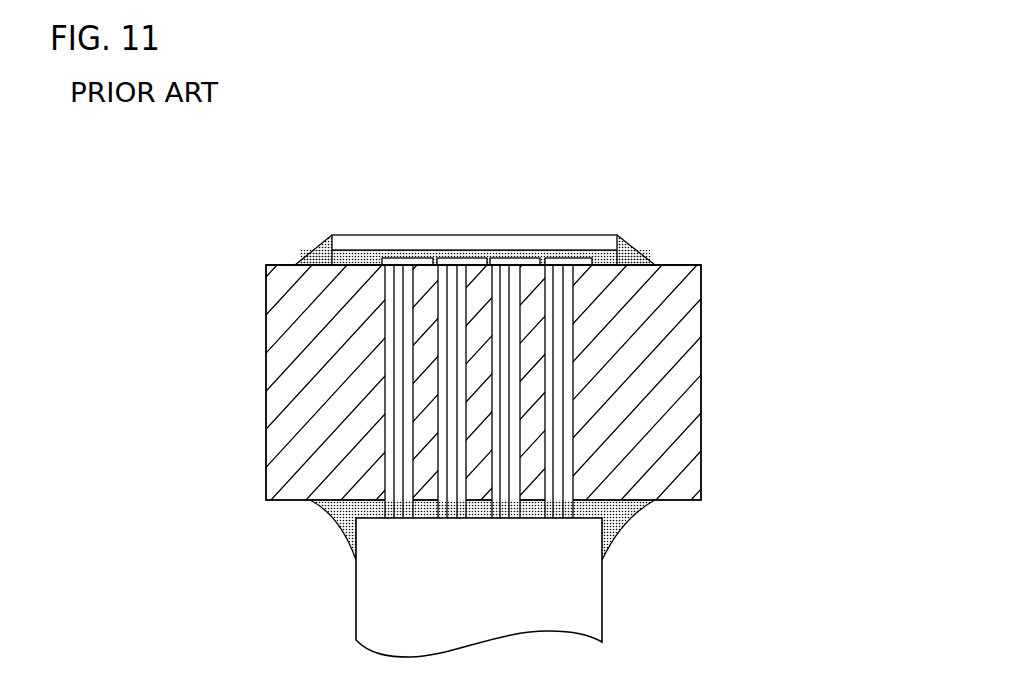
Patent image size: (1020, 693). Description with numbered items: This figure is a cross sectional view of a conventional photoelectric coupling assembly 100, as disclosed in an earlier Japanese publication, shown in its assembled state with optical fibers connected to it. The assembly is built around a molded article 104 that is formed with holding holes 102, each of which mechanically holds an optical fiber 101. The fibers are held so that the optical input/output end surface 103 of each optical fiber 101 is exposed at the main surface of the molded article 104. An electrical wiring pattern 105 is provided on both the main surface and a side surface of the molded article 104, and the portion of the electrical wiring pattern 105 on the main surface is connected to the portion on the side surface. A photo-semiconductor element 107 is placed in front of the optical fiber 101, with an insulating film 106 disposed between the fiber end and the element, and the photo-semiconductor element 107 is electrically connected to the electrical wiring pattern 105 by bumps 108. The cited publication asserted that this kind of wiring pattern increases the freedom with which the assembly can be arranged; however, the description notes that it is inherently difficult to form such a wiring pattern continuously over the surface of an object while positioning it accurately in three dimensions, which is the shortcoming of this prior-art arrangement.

The photoelectric coupling assembly 100 is at (714, 243).
The optical fiber 101 is at (560, 390).
The holding hole 102 is at (386, 372).
The optical input/output end surface 103 is at (562, 258).
The molded article 104 is at (285, 317).
The electrical wiring pattern 105 is at (633, 252).
The insulating film 106 is at (610, 250).
The photo-semiconductor element 107 is at (364, 245).
The bump 108 is at (590, 250).